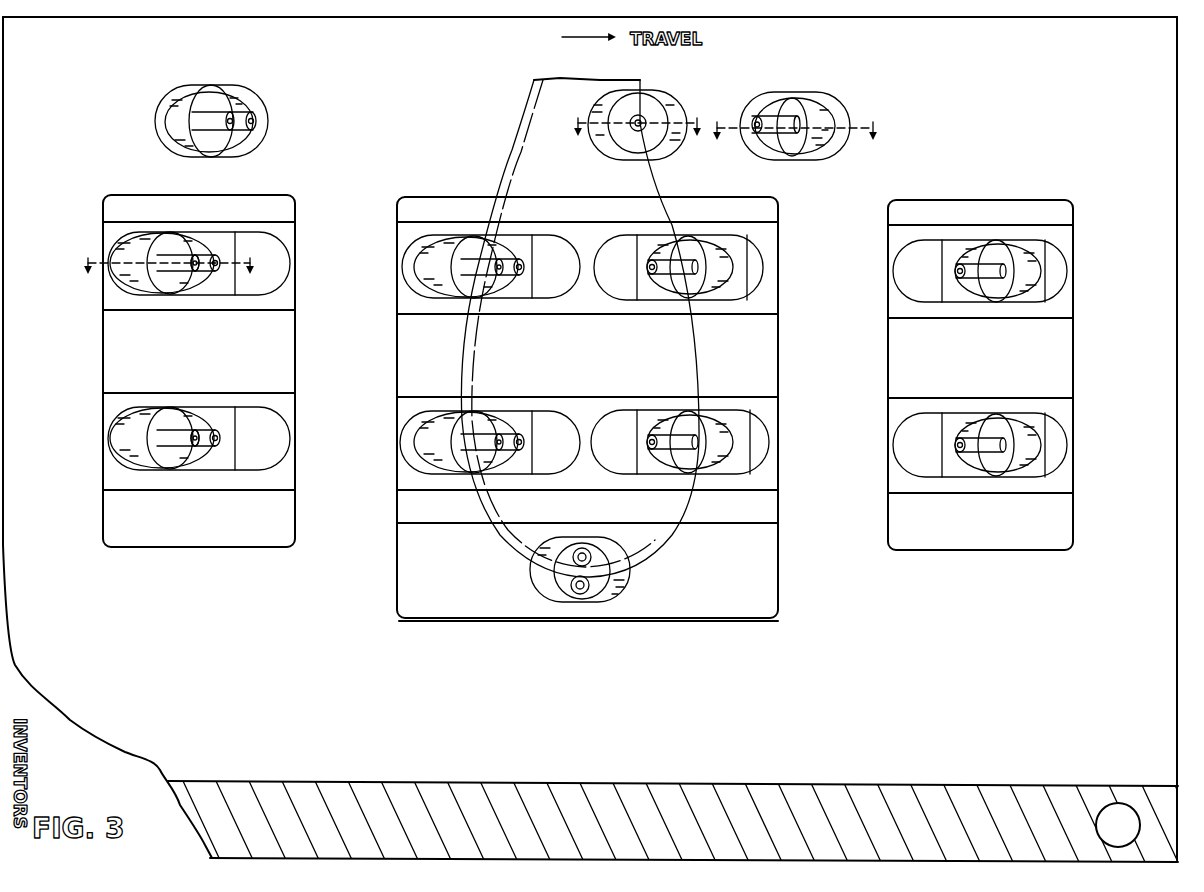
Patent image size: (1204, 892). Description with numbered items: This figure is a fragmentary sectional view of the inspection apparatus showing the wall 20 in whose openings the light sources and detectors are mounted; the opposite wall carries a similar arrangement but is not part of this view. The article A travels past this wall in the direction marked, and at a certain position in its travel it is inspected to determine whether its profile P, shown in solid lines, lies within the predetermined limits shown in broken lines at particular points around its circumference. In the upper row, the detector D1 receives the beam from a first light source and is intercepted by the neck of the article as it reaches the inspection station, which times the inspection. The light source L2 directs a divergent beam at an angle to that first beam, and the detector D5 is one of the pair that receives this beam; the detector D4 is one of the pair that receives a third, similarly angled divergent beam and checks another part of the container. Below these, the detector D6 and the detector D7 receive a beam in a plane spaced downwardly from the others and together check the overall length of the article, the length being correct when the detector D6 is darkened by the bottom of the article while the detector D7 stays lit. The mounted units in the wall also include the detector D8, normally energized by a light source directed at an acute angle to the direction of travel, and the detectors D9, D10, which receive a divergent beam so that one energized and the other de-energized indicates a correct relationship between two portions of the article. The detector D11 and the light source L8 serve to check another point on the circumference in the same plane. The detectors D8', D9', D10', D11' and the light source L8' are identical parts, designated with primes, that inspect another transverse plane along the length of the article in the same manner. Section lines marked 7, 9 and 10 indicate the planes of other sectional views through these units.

The wall 20 is at (975, 32).
The detector D9 is at (199, 248).
The detector D10 is at (222, 236).
The section line 10- 10 is at (170, 276).
The detector D9' is at (199, 421).
The detector D10' is at (229, 408).
The detector D8 is at (491, 250).
The light source L8 is at (678, 251).
The detector D8' is at (490, 422).
The light source L8' is at (680, 424).
The detector D11 is at (980, 252).
The detector D11' is at (980, 425).
The detector D5 is at (208, 115).
The detector D4 is at (245, 113).
The detector D1 is at (642, 120).
The section line 9- 9 is at (638, 117).
The light source L2 is at (783, 119).
The section line 7- 7 is at (797, 142).
The detector D6 is at (586, 553).
The detector D7 is at (578, 592).
The article A is at (668, 186).
The profile P is at (508, 150).